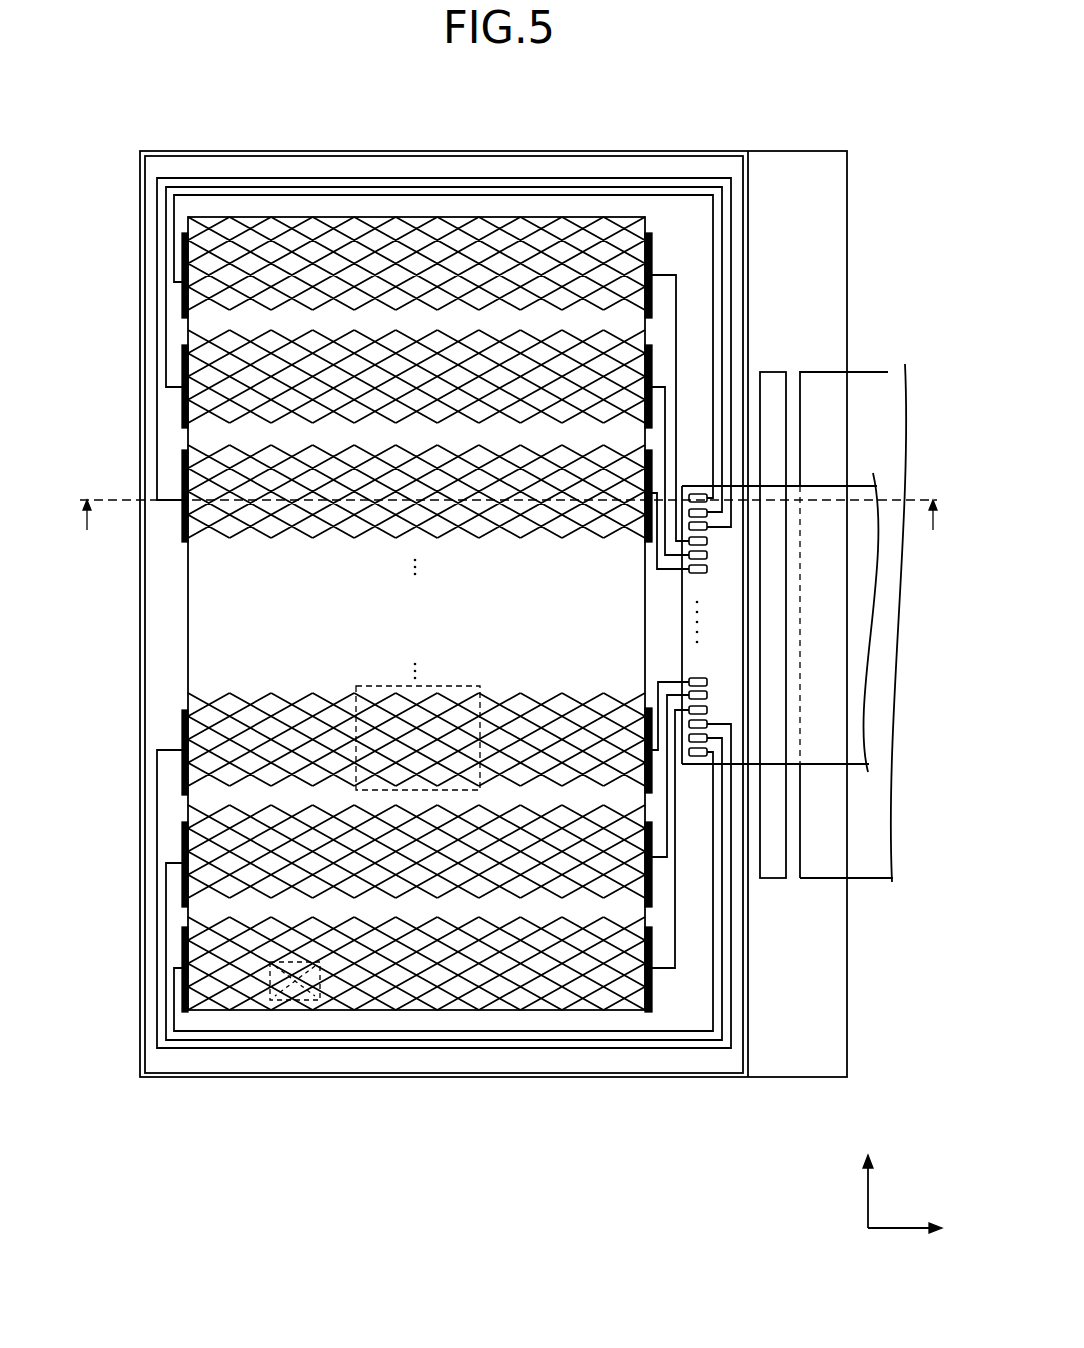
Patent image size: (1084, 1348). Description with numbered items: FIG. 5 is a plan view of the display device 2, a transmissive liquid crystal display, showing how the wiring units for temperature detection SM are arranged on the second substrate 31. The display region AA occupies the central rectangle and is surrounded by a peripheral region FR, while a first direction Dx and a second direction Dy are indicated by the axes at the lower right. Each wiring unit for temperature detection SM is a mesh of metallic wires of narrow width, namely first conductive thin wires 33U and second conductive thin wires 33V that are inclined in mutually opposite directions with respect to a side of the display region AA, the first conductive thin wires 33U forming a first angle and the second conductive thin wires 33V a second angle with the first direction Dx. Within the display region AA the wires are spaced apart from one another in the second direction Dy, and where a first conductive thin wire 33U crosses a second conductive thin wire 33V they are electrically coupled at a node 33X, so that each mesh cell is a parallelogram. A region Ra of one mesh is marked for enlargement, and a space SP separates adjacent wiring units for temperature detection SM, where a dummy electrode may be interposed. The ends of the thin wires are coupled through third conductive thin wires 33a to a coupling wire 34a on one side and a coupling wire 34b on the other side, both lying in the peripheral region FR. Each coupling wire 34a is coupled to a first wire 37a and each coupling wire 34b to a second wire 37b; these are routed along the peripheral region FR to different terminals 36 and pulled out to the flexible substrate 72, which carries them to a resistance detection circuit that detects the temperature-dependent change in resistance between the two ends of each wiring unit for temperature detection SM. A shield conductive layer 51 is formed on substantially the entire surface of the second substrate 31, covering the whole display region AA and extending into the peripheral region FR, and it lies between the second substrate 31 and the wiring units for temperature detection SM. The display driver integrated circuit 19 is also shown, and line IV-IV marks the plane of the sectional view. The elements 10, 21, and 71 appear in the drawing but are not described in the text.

The display device 2 is at (800, 145).
The display panel 10 is at (217, 217).
The display region AA is at (292, 217).
The peripheral region FR is at (413, 151).
The shield conductive layer 51 is at (520, 167).
The wiring unit for temperature detection SM is at (622, 208).
The coupling wire 34a is at (182, 249).
The first wire 37a is at (174, 272).
The coupling wire 34b is at (653, 260).
The second wire 37b is at (677, 299).
The display driver integrated circuit 19 is at (773, 398).
The terminals 36 is at (698, 492).
The line IV- IV is at (507, 529).
The flexible substrate 72 is at (876, 612).
The region Ra is at (450, 686).
The flexible substrate 71 is at (858, 857).
The space SP is at (211, 920).
The third conductive thin wires 33a is at (182, 972).
The first conductive thin wires 33U is at (278, 996).
The node 33X is at (293, 1008).
The second conductive thin wires 33V is at (326, 1008).
The second substrate 31 is at (217, 1086).
The terminal region 21 is at (793, 1087).
The second direction Dy is at (868, 1200).
The first direction Dx is at (905, 1230).